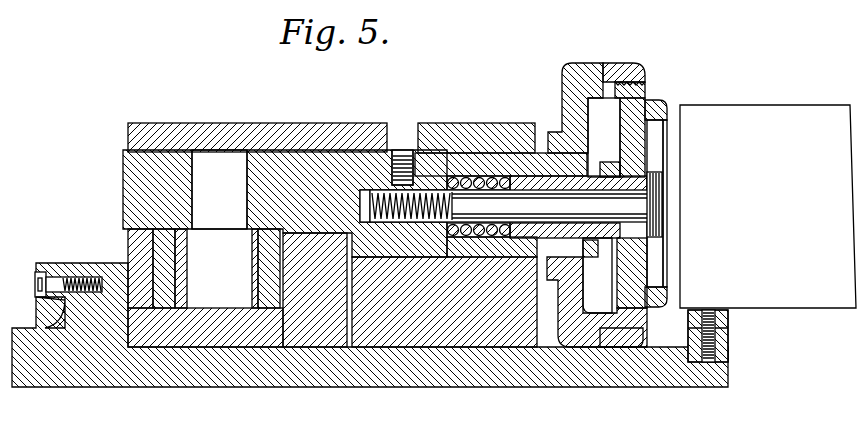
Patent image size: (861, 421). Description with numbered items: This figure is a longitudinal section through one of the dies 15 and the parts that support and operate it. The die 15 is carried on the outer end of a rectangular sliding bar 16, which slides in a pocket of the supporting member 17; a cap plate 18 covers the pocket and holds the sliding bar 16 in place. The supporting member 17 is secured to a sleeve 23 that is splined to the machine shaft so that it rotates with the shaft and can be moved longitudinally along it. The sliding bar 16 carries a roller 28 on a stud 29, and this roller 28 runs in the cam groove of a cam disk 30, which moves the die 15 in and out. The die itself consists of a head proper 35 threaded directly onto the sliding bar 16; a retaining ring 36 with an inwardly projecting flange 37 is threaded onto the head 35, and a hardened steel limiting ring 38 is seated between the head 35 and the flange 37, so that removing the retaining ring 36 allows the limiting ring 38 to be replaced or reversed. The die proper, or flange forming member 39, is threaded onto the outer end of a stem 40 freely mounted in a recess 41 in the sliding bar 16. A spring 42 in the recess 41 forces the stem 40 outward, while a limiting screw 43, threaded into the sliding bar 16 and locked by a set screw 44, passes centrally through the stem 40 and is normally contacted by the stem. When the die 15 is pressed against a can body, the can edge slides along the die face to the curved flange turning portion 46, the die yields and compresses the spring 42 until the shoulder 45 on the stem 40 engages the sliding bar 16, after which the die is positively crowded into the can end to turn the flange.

The die 15 is at (571, 72).
The sliding bar 16 is at (473, 165).
The supporting member 17 is at (421, 320).
The cap plate 18 is at (306, 140).
The sleeve 23 is at (538, 375).
The roller 28 is at (152, 258).
The stud 29 is at (218, 165).
The cam disk 30 is at (312, 327).
The head proper 35 is at (604, 137).
The retaining ring 36 is at (632, 67).
The flange 37 is at (652, 94).
The limiting ring 38 is at (642, 86).
The flange forming member 39 is at (634, 281).
The stem 40 is at (648, 174).
The recess 41 is at (523, 152).
The spring 42 is at (461, 177).
The limiting screw 43 is at (656, 195).
The set screw 44 is at (401, 156).
The shoulder 45 is at (603, 257).
The curved flange turning portion 46 is at (650, 103).